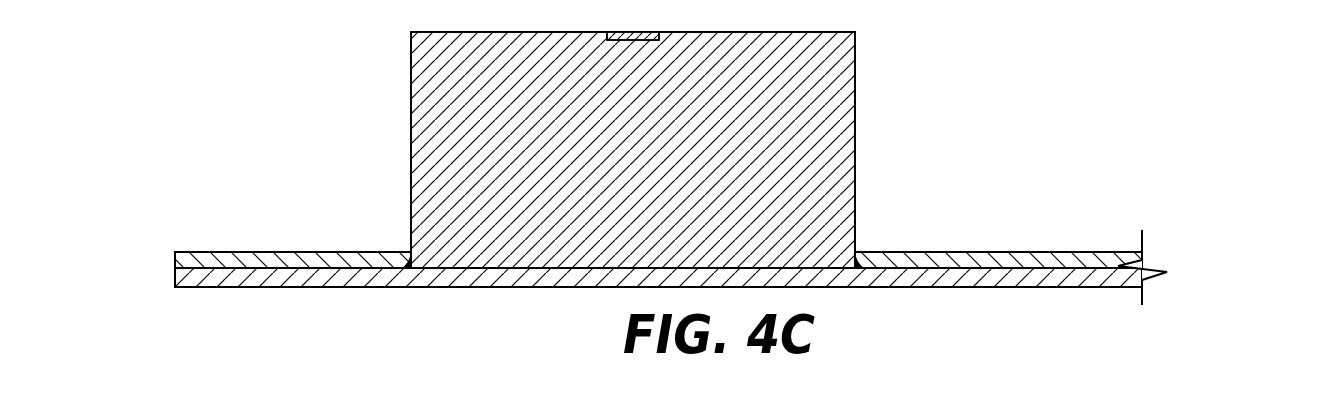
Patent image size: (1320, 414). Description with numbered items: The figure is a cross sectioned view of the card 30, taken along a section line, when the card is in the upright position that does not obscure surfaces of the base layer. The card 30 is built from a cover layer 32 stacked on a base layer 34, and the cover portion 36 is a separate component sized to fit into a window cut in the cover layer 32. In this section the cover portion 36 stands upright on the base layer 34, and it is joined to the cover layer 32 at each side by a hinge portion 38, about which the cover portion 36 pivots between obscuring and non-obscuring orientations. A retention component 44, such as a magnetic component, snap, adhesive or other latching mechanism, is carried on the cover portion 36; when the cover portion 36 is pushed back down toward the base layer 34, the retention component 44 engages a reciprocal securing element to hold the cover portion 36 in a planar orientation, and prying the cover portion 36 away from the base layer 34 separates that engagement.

The card 30 is at (674, 172).
The cover layer 32 is at (993, 262).
The base layer 34 is at (940, 282).
The cover portion 36 is at (422, 150).
The hinge portion 38 is at (410, 265).
The retention component 44 is at (613, 36).